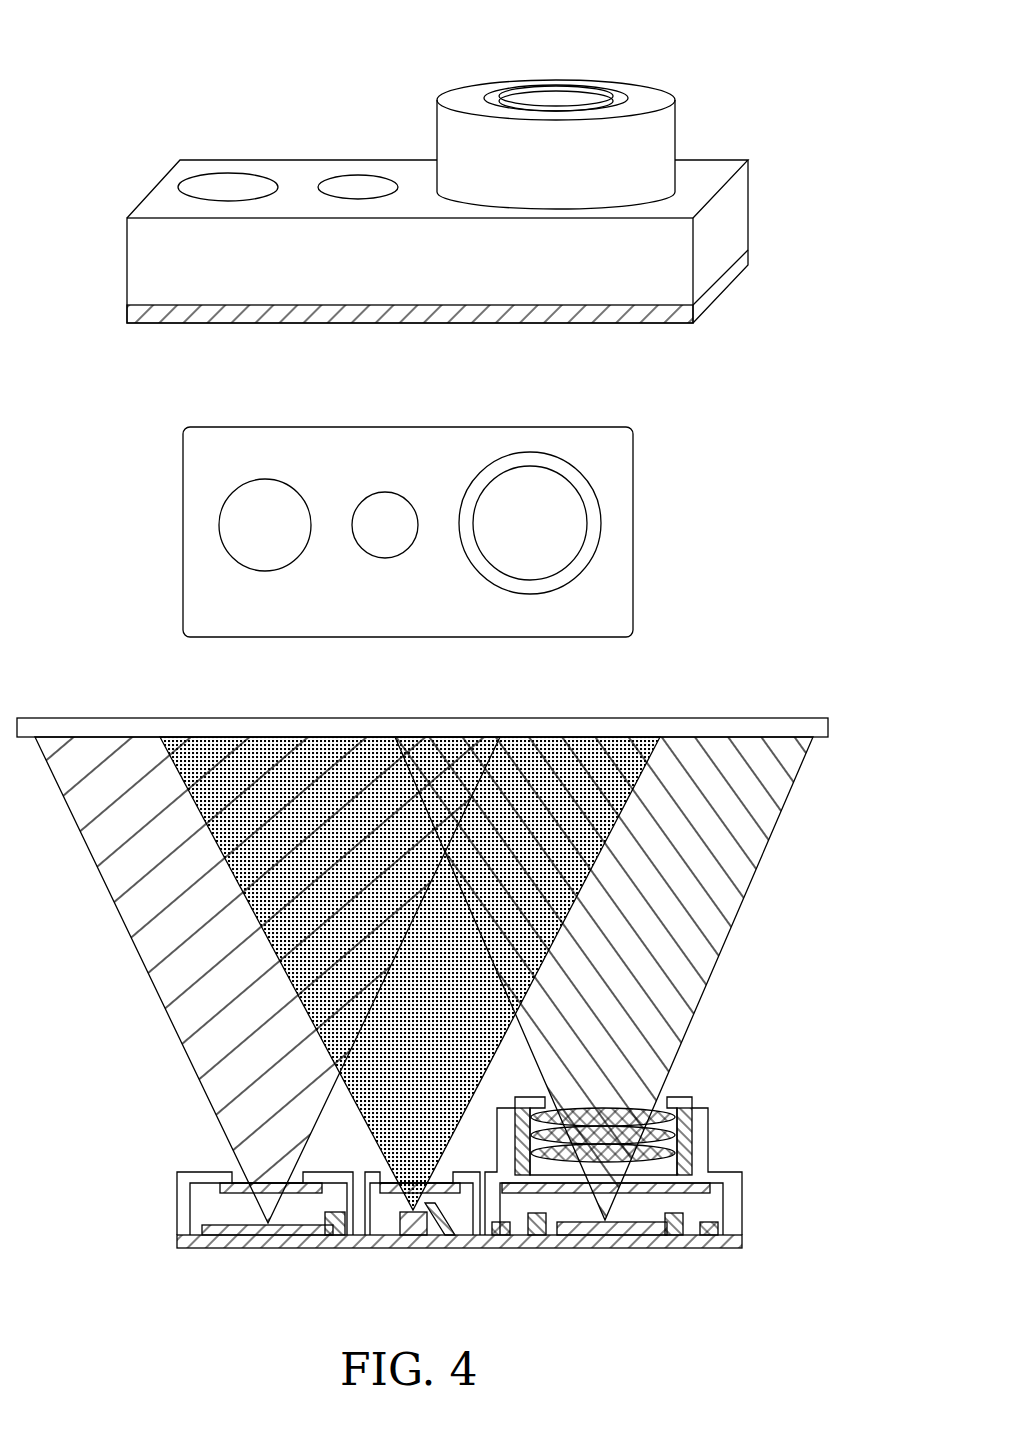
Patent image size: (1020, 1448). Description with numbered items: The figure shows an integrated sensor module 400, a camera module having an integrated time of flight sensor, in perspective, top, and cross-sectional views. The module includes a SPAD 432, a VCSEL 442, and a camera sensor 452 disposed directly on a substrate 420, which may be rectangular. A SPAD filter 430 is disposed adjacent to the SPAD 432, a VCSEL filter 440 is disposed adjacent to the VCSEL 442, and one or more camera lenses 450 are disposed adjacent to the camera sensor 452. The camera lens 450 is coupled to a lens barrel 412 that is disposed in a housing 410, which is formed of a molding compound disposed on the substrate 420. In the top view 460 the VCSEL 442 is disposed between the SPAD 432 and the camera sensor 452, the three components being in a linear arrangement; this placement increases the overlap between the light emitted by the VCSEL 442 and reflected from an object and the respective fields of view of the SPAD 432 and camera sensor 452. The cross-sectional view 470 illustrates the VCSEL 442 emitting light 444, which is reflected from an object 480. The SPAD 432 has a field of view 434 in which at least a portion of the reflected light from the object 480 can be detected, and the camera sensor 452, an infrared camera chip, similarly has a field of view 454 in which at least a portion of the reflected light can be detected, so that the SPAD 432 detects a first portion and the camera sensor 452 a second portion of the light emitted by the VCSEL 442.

The integrated sensor module 400 is at (500, 648).
The housing 410 is at (750, 172).
The lens barrel 412 is at (640, 86).
The substrate 420 is at (748, 262).
The SPAD filter 430 is at (222, 176).
The SPAD 432 is at (268, 1236).
The field of view 434 is at (128, 884).
The VCSEL filter 440 is at (360, 177).
The VCSEL 442 is at (423, 1238).
The light 444 is at (557, 750).
The camera lens 450 is at (548, 97).
The camera sensor 452 is at (620, 1236).
The field of view 454 is at (744, 856).
The top view 460 is at (678, 422).
The cross-sectional view 470 is at (824, 688).
The object 480 is at (392, 735).